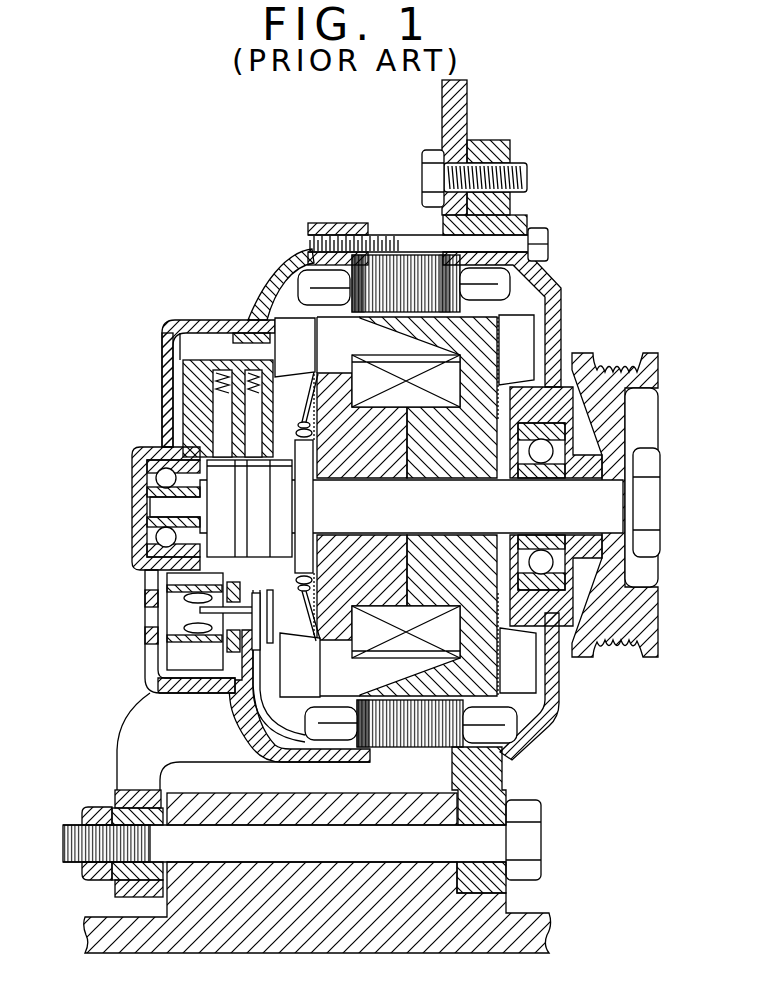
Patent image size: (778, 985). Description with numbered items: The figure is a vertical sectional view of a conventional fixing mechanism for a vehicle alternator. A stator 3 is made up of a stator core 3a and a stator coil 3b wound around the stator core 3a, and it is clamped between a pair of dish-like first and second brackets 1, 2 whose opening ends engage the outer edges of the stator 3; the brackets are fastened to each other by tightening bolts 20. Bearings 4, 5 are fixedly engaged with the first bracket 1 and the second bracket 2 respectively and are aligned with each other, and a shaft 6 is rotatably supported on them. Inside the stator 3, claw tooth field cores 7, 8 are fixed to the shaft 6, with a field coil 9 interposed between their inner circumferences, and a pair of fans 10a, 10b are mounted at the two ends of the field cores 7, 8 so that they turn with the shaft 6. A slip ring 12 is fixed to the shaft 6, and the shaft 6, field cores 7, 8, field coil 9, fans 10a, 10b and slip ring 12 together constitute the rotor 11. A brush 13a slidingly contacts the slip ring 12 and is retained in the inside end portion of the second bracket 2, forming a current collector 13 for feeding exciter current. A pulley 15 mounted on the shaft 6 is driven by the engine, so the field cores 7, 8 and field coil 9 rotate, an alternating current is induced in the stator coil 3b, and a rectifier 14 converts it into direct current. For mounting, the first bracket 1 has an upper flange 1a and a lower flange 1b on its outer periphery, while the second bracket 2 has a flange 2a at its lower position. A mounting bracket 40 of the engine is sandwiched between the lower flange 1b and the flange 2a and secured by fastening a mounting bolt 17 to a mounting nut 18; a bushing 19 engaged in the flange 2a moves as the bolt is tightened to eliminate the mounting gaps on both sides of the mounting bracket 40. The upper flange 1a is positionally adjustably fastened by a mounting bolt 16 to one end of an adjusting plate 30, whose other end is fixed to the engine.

The first bracket 1 is at (563, 663).
The upper flange 1a is at (510, 143).
The lower flange 1b is at (490, 778).
The second bracket 2 is at (292, 250).
The flange 2a is at (120, 747).
The stator 3 is at (380, 235).
The stator core 3a is at (380, 260).
The stator coil 3b is at (506, 280).
The bearing 4 is at (573, 437).
The bearing 5 is at (147, 473).
The shaft 6 is at (625, 578).
The claw tooth field core 7 is at (477, 323).
The claw tooth field core 8 is at (278, 336).
The field coil 9 is at (450, 378).
The fan 10a is at (524, 325).
The fan 10b is at (275, 333).
The rotor 11 is at (332, 332).
The slip ring 12 is at (180, 448).
The current collector 13 is at (197, 372).
The brush 13a is at (177, 363).
The rectifier 14 is at (200, 607).
The pulley 15 is at (653, 373).
The mounting bolt 16 is at (422, 168).
The mounting bolt 17 is at (542, 837).
The mounting nut 18 is at (90, 813).
The bushing 19 is at (120, 887).
The bolt 20 is at (543, 228).
The adjusting plate 30 is at (460, 98).
The mounting bracket 40 is at (446, 903).